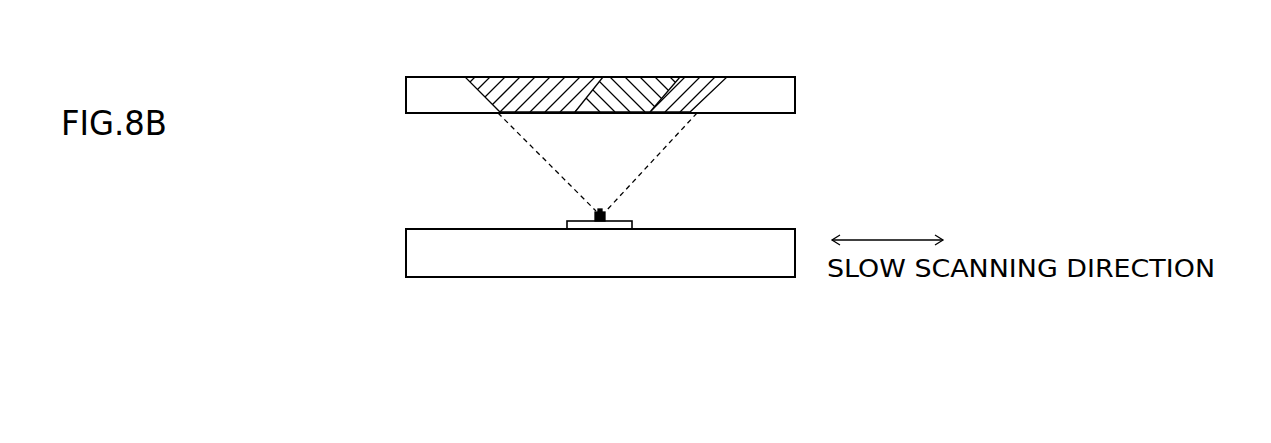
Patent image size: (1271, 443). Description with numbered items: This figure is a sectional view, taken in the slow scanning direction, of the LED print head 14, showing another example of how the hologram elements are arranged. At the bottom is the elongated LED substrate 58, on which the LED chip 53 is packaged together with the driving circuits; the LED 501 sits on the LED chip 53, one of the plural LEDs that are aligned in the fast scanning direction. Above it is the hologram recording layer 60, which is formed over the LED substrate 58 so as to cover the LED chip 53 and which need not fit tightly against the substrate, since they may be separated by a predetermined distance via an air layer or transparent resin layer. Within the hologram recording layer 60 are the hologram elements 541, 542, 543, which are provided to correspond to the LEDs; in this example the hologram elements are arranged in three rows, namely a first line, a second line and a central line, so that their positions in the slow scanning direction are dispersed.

The LED print head 14 is at (898, 65).
The hologram recording layer 60 is at (763, 88).
The hologram element 541 is at (533, 95).
The hologram element 542 is at (635, 88).
The hologram element 543 is at (714, 88).
The LED substrate 58 is at (772, 246).
The LED chip 53 is at (568, 224).
The LED 501 is at (605, 216).